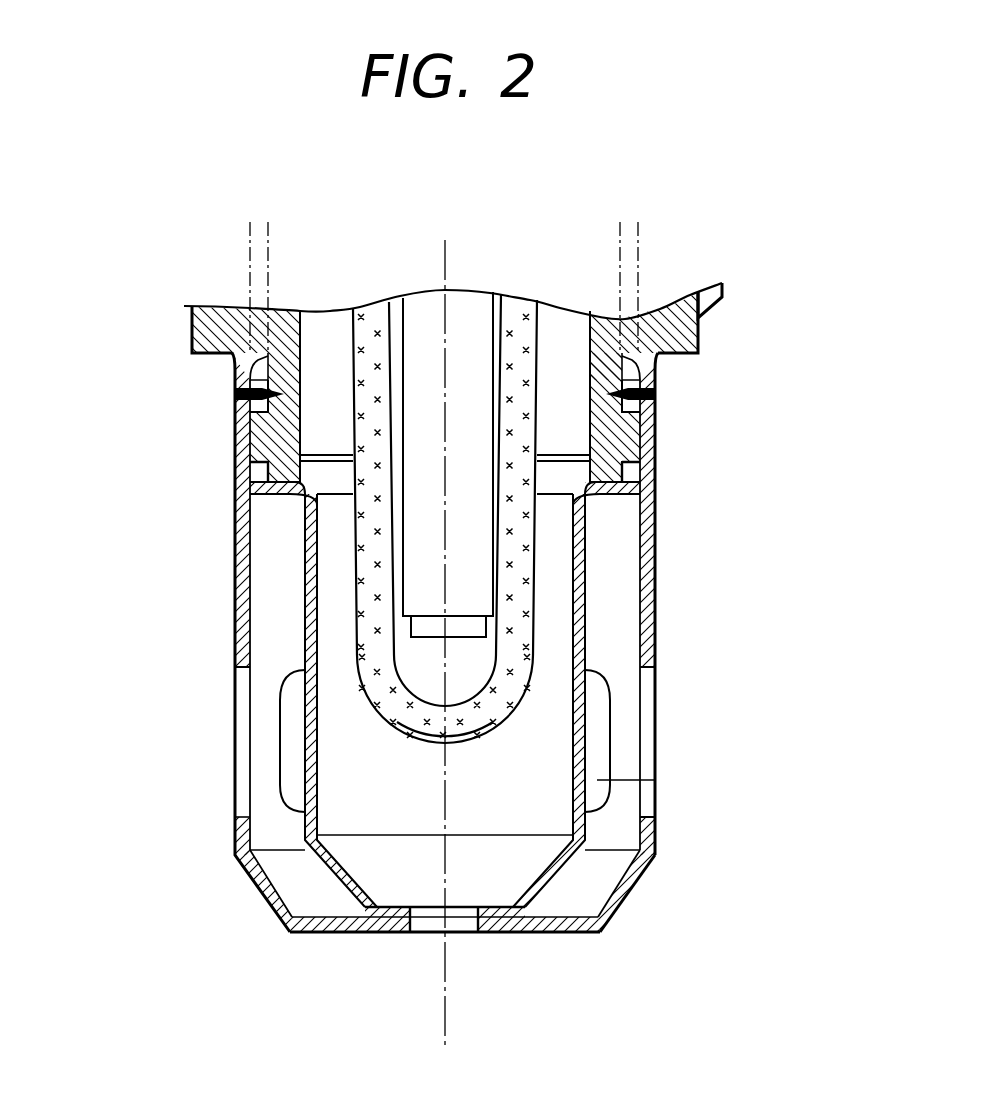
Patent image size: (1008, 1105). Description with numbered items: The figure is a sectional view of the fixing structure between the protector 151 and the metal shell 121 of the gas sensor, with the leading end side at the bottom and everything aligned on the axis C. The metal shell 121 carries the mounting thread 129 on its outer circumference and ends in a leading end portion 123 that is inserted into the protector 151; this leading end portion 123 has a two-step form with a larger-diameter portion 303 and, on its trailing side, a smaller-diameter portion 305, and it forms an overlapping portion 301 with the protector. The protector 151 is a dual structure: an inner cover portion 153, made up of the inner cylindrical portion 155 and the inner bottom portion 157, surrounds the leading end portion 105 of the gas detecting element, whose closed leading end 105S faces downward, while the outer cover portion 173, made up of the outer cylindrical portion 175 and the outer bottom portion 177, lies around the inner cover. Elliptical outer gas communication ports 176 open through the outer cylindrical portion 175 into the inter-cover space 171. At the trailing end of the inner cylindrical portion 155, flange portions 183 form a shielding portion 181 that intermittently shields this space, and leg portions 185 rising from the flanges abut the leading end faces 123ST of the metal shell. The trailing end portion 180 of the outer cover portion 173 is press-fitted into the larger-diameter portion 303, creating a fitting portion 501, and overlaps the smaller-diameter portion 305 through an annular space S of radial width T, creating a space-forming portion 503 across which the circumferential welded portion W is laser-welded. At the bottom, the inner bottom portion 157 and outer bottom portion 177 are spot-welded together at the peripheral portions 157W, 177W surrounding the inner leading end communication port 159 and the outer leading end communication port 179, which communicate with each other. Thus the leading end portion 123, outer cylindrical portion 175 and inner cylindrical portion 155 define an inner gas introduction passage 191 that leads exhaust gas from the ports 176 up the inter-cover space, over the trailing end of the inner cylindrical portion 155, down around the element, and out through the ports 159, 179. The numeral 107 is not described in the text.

The metal shell 121 is at (518, 295).
The mounting thread 129 is at (718, 307).
The leading end portion 123 is at (141, 500).
The smaller-diameter portion 305 is at (243, 383).
The larger-diameter portion 303 is at (247, 443).
The overlapping portion 301 is at (222, 447).
The leading end face 123ST is at (270, 493).
The inner gas introduction passage 191 is at (290, 503).
The inner cylindrical portion 155 is at (305, 600).
The inter-cover space 171 is at (266, 788).
The leading end portion of the gas detecting element 105 is at (606, 560).
The leading end 105S is at (460, 738).
The inner cylinder 107 is at (583, 608).
The outer cylindrical portion 175 is at (518, 605).
The protector 151 is at (647, 573).
The trailing end portion 180 is at (660, 458).
The leg portions 185 is at (632, 472).
The shielding portion 181 is at (590, 496).
The flange portions 183 is at (592, 500).
The inner cover portion 153 is at (583, 803).
The outer cover portion 173 is at (657, 852).
The outer gas communication ports 176 is at (648, 755).
The inner bottom portion 157 is at (362, 925).
The peripheral portion 157W is at (386, 920).
The inner leading end communication port 159 is at (433, 935).
The outer leading end communication port 179 is at (468, 935).
The peripheral portion 177W is at (522, 922).
The outer bottom portion 177 is at (577, 925).
The fitting portion 501 is at (667, 433).
The space-forming portion 503 is at (665, 385).
The welded portion W is at (658, 407).
The annular space S is at (258, 357).
The width T is at (683, 217).
The axis C is at (442, 629).